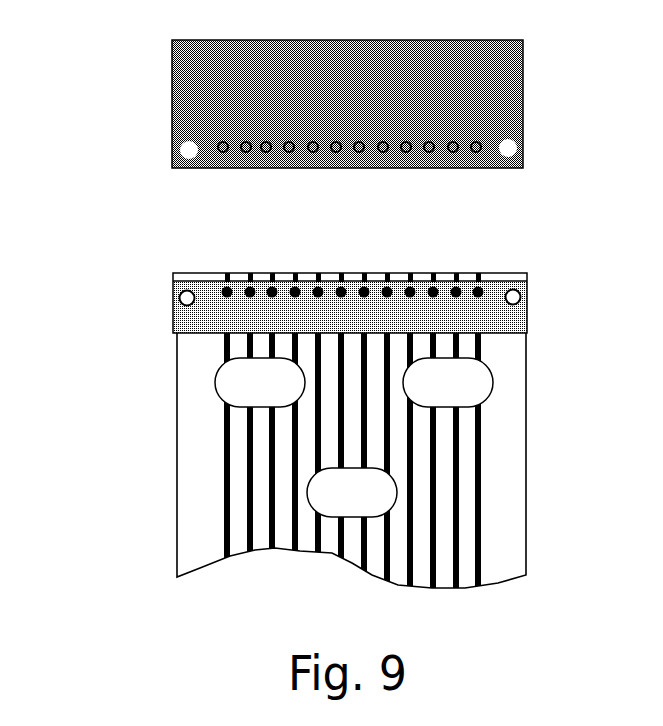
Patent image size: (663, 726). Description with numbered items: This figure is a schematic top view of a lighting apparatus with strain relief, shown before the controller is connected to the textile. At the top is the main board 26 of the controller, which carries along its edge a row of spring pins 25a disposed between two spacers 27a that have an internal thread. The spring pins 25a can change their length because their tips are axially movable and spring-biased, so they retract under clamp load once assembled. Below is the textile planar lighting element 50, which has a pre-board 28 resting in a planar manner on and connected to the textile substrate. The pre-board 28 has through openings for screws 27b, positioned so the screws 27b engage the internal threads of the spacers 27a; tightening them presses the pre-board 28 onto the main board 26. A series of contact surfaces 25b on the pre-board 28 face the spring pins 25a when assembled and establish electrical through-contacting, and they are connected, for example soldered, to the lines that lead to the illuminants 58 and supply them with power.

The main board 26 is at (170, 90).
The spring pins 25a is at (366, 155).
The spacers 27a is at (514, 156).
The pre-board 28 is at (173, 315).
The contact surfaces 25b is at (369, 276).
The screws 27b is at (523, 292).
The textile planar lighting element 50 is at (177, 513).
The illuminants 58 is at (216, 382).